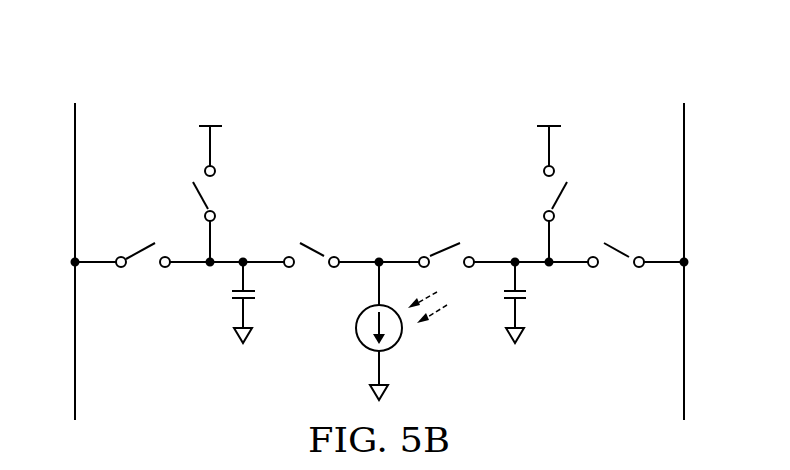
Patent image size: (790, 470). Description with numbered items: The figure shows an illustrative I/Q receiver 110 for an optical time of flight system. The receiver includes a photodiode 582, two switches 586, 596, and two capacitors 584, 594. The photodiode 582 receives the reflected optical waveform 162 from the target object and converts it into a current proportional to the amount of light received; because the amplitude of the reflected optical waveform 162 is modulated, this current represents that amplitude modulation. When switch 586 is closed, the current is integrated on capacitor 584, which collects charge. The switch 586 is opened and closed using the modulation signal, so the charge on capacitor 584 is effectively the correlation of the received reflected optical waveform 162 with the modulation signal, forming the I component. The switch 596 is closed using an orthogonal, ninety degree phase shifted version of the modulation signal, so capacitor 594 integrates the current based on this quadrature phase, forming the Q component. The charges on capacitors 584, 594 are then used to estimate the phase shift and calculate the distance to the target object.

The I/Q receiver 110 is at (311, 93).
The photodiode 582 is at (355, 327).
The capacitor 584 is at (230, 293).
The switch 586 is at (320, 252).
The switch 596 is at (443, 252).
The capacitor 594 is at (530, 295).
The reflected optical waveform 162 is at (443, 305).